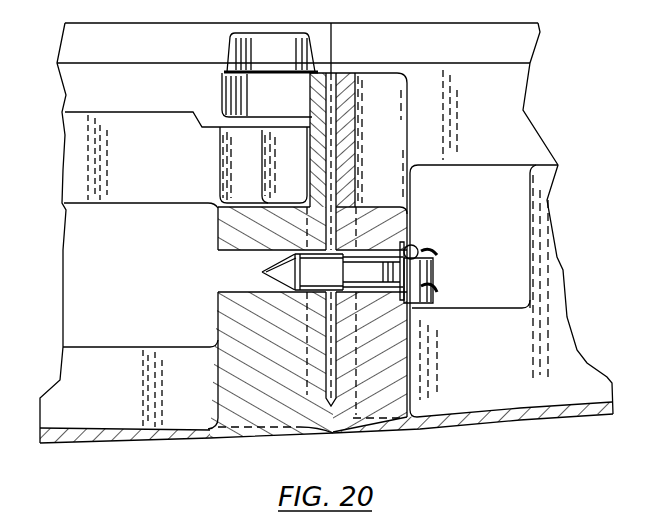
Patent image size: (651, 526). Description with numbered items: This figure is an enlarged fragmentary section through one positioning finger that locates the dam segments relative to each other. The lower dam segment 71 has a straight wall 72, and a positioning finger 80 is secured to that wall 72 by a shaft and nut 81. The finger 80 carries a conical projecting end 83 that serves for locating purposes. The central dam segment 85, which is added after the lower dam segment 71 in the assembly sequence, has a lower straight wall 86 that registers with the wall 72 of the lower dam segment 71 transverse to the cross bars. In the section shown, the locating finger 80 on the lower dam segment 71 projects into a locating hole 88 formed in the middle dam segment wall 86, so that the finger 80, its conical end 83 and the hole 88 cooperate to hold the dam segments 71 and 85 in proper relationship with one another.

The lower dam segment 71 is at (480, 393).
The straight wall 72 is at (355, 97).
The positioning finger 80 is at (340, 285).
The shaft and nut 81 is at (414, 250).
The conical projecting end 83 is at (262, 272).
The central dam segment 85 is at (142, 398).
The lower straight wall 86 is at (310, 93).
The locating hole 88 is at (238, 250).